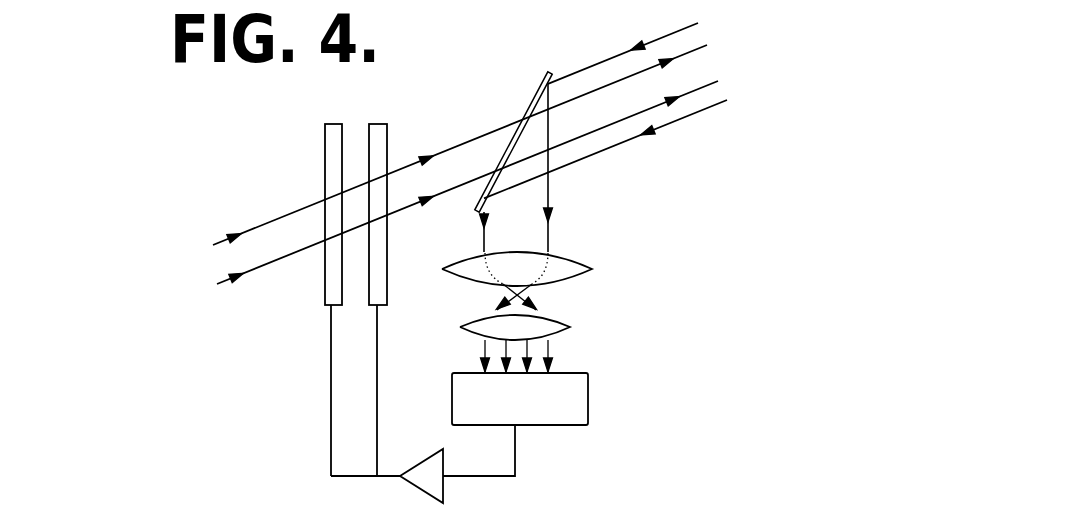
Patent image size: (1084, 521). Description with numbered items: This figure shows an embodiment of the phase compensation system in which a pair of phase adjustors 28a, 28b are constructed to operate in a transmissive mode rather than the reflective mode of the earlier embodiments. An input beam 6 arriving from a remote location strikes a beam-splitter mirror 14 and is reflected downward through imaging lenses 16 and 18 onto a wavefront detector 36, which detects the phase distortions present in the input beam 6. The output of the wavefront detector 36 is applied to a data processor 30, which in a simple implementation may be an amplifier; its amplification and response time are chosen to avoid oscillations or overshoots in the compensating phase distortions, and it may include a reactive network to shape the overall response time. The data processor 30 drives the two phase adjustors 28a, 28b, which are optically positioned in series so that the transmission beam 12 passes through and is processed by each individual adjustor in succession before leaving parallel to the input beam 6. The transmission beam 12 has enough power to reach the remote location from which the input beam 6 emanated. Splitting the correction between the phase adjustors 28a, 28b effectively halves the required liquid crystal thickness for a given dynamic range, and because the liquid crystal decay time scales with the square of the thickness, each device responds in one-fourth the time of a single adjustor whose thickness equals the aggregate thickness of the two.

The input beam 6 is at (680, 29).
The transmission beam 12 is at (282, 217).
The beam-splitter mirror 14 is at (537, 100).
The imaging lens 16 is at (573, 262).
The imaging lens 18 is at (478, 325).
The phase adjustor 28a is at (325, 150).
The phase adjustor 28b is at (388, 142).
The data processor 30 is at (423, 458).
The wavefront detector 36 is at (590, 410).